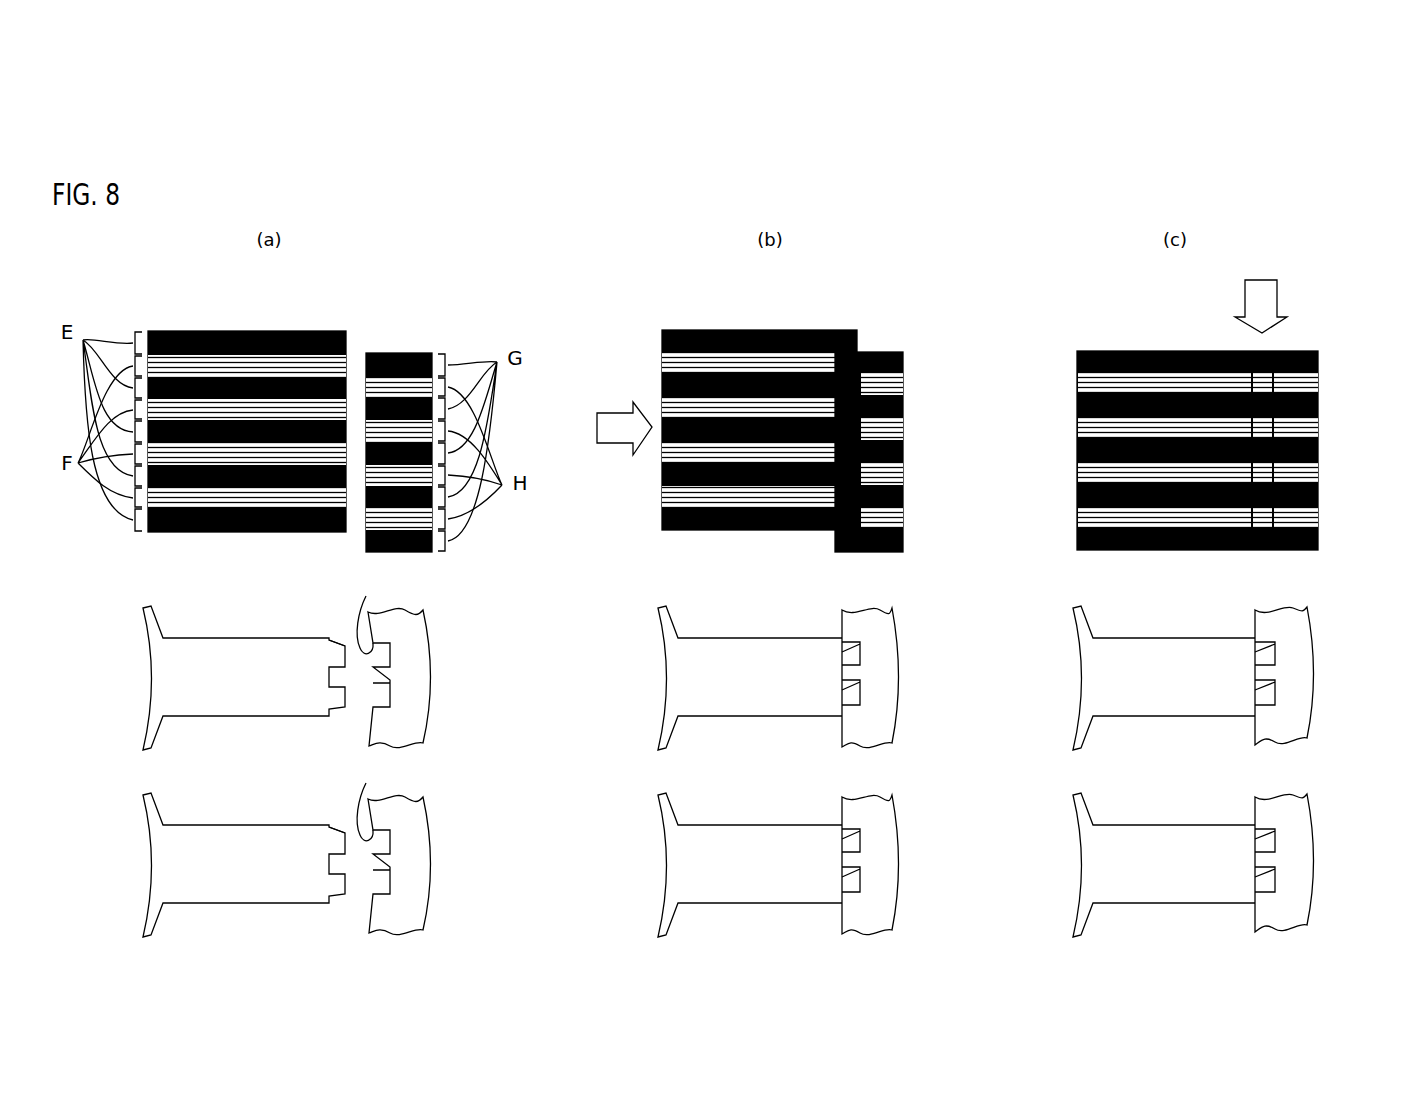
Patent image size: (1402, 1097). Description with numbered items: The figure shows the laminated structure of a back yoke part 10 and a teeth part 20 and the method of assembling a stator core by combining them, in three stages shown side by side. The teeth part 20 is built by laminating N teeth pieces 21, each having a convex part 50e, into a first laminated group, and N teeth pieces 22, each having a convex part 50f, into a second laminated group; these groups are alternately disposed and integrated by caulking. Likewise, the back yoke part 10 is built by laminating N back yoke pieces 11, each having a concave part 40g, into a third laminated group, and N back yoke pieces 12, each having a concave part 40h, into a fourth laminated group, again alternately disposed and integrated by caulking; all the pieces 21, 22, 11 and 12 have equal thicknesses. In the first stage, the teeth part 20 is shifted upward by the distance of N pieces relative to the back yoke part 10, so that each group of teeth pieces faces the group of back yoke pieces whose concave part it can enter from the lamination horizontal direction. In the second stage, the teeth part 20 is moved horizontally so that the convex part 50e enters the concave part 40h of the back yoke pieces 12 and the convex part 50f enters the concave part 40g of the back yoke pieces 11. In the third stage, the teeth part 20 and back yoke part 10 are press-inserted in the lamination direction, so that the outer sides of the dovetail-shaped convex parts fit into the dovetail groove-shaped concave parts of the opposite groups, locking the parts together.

The back yoke part 10 is at (398, 352).
The teeth part 20 is at (262, 330).
The back yoke piece 11 is at (423, 820).
The back yoke piece 12 is at (423, 630).
The teeth piece 21 is at (222, 637).
The teeth piece 22 is at (222, 825).
The concave part 40g is at (366, 783).
The concave part 40h is at (366, 596).
The convex part 50e is at (338, 643).
The convex part 50f is at (339, 832).